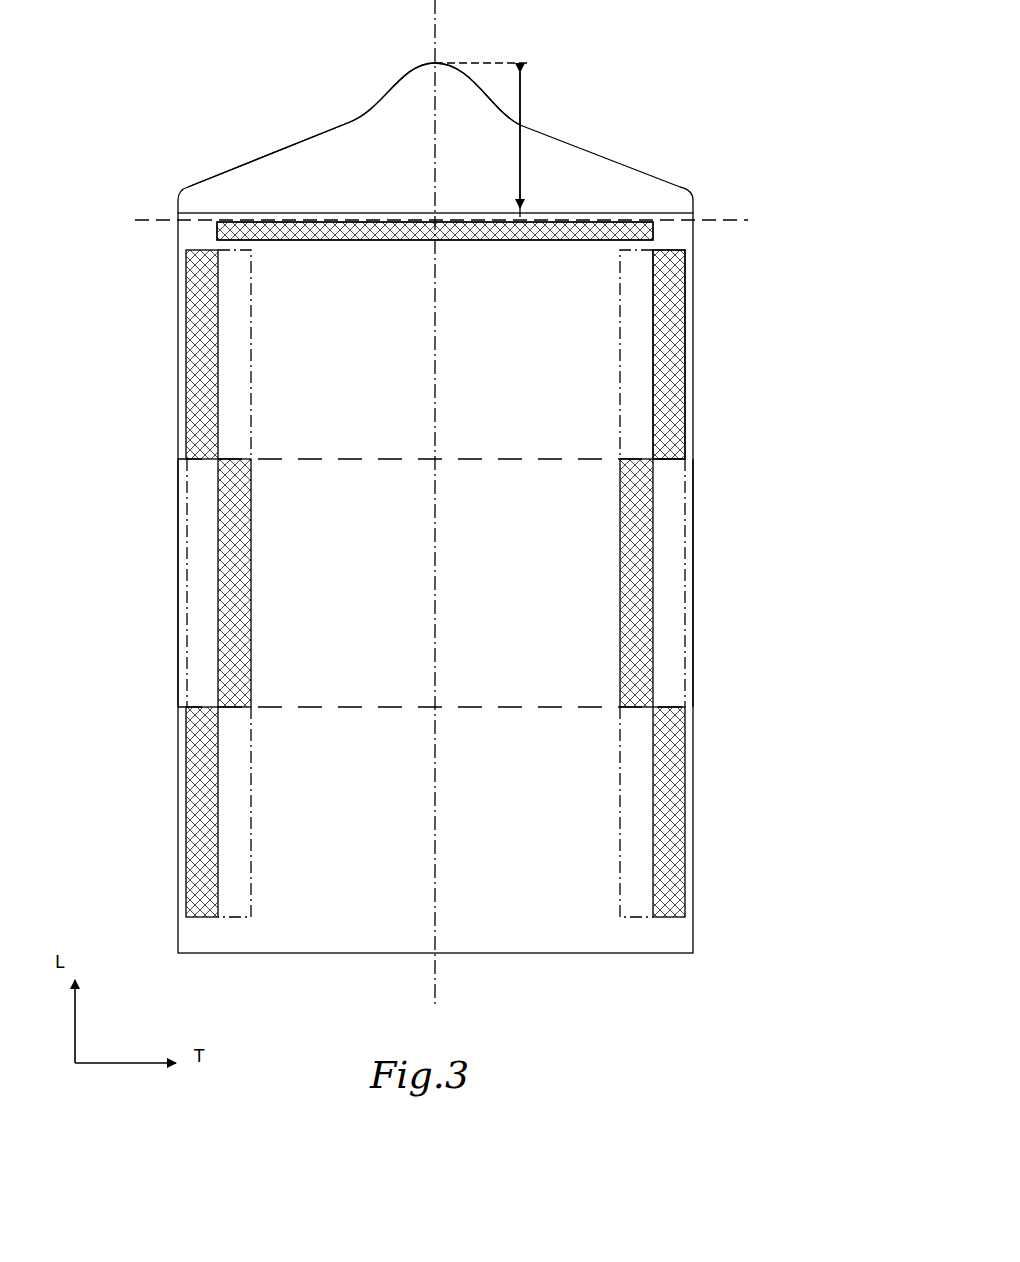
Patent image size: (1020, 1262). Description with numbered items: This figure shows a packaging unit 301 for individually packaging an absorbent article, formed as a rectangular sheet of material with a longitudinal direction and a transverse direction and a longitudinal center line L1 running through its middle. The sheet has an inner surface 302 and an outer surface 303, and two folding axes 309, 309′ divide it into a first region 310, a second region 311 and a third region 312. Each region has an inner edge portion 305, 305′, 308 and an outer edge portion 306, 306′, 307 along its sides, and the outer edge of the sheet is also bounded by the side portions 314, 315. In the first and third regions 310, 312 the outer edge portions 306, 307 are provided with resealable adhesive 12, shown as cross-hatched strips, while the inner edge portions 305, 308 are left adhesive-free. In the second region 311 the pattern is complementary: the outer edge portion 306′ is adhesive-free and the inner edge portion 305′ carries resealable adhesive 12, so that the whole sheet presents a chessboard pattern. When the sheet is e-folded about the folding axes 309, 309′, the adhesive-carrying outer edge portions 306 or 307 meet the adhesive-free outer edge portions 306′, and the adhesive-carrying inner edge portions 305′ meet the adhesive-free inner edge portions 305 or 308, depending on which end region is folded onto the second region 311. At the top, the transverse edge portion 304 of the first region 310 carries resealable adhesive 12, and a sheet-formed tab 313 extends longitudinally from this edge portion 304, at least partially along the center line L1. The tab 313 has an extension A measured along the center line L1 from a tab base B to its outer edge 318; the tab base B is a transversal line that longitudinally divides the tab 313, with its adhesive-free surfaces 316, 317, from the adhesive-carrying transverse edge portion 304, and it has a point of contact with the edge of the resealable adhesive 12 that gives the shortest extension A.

The packaging unit 301 is at (757, 167).
The inner surface 302 is at (473, 875).
The outer surface 303 is at (668, 390).
The transverse edge portion 304 is at (280, 233).
The inner edge portion 305 is at (251, 328).
The inner edge portion 305′ is at (253, 583).
The outer edge portion 306 is at (200, 315).
The outer edge portion 306′ is at (197, 547).
The outer edge portion 307 is at (200, 815).
The inner edge portion 308 is at (251, 770).
The folding axis 309 is at (485, 459).
The folding axis 309′ is at (468, 707).
The first region 310 is at (440, 362).
The second region 311 is at (440, 577).
The third region 312 is at (434, 817).
The sheet-formed tab 313 is at (240, 143).
The left side wall 314 is at (178, 607).
The right side wall 315 is at (693, 598).
The adhesive-free surface 316 is at (397, 177).
The adhesive-free surface 317 is at (390, 152).
The outer edge 318 is at (312, 138).
The resealable adhesive 12 is at (455, 230).
The extension A is at (525, 96).
The tab base B is at (708, 219).
The longitudinal center line L1 is at (437, 14).